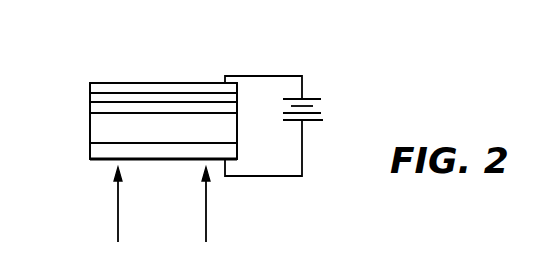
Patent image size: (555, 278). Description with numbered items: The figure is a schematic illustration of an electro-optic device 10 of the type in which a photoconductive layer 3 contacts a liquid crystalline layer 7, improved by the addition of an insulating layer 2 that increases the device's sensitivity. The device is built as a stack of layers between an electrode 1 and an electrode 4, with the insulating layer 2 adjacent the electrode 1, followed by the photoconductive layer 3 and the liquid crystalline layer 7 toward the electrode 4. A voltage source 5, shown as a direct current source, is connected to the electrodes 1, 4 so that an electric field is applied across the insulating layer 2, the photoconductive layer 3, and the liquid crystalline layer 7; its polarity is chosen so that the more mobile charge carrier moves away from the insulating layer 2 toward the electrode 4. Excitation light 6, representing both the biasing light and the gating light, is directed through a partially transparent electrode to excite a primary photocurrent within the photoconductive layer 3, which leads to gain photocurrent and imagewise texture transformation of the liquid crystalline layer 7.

The electro-optic device 10 is at (172, 69).
The electrode 4 is at (108, 83).
The liquid crystalline layer 7 is at (90, 93).
The photoconductive layer 3 is at (90, 107).
The insulating layer 2 is at (90, 129).
The electrode 1 is at (90, 150).
The voltage source 5 is at (318, 104).
The excitation light 6 is at (206, 209).